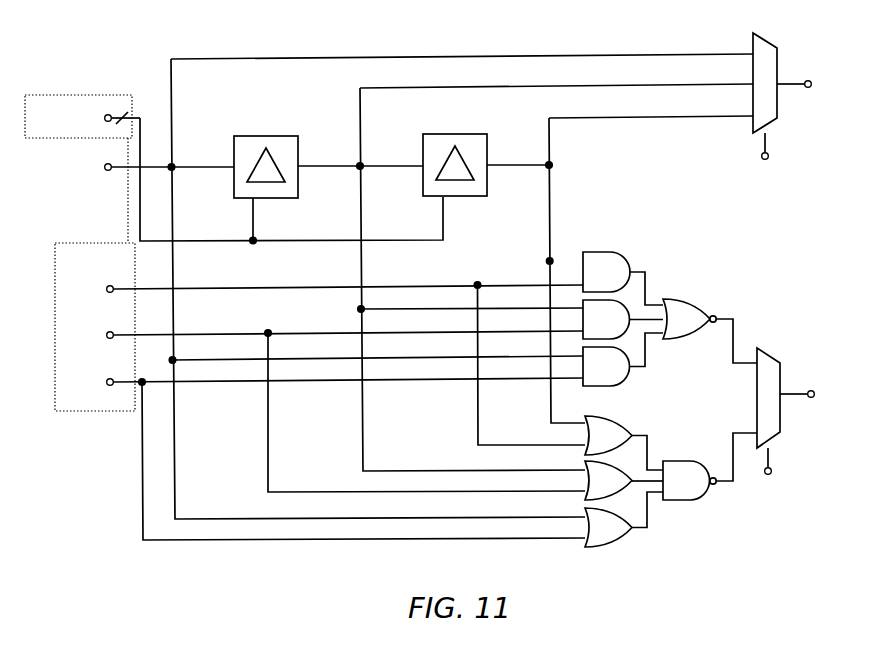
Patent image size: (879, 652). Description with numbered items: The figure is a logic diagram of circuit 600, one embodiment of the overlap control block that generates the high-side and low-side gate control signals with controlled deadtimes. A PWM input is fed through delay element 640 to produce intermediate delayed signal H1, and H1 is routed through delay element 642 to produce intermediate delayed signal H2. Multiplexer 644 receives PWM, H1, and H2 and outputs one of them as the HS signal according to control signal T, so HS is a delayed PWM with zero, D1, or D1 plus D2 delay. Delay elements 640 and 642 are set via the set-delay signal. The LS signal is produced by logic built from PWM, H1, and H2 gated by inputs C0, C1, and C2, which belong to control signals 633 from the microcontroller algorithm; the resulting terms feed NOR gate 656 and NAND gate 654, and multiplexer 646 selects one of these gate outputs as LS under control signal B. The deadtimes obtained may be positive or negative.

The circuit 600 is at (131, 34).
The control signals 633 is at (91, 413).
The delay element 640 is at (266, 200).
The delay element 642 is at (456, 198).
The multiplexer 644 is at (771, 42).
The multiplexer 646 is at (772, 355).
The NAND gate 654 is at (689, 480).
The NOR gate 656 is at (689, 298).